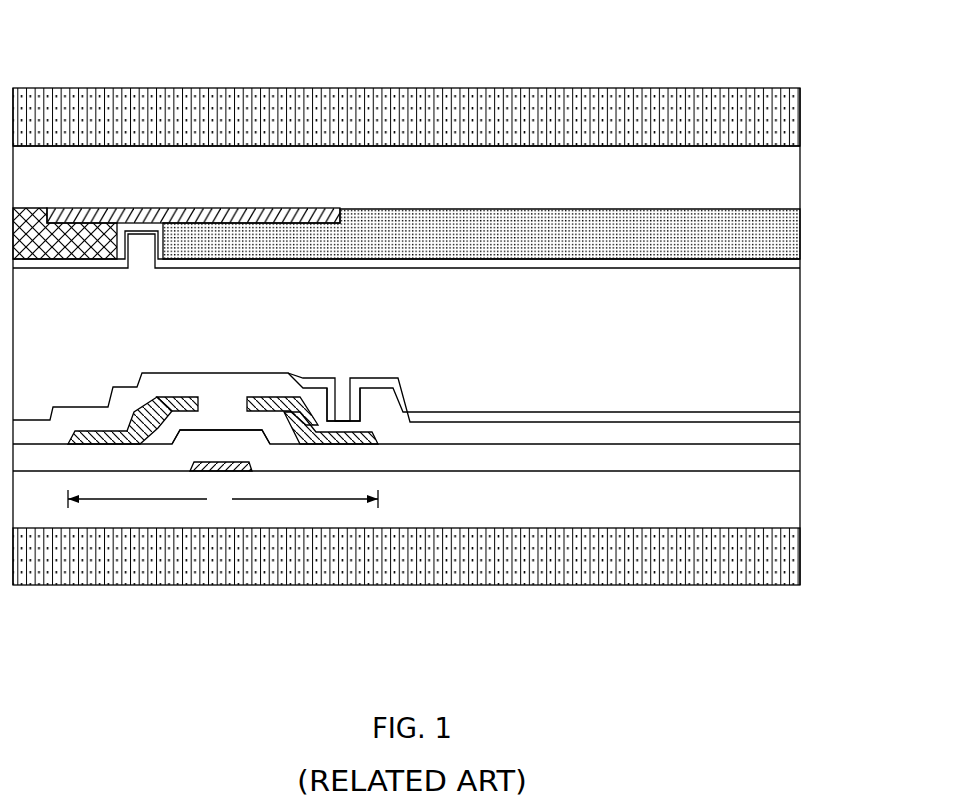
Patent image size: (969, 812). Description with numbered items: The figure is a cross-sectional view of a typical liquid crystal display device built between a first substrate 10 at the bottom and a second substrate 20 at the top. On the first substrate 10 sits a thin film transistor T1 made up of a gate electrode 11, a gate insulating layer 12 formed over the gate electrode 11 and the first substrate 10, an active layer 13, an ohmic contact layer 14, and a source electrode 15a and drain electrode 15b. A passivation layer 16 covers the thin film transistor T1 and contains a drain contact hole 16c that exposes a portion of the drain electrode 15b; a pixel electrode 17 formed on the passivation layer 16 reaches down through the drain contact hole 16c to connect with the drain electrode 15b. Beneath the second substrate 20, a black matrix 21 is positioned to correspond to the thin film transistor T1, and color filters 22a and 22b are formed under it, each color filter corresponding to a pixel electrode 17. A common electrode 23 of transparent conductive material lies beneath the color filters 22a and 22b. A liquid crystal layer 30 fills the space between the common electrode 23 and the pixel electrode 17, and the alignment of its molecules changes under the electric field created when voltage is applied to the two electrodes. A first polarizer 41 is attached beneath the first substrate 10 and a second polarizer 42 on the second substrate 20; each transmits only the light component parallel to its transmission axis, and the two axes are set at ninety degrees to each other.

The first substrate 10 is at (463, 505).
The gate electrode 11 is at (208, 471).
The gate insulating layer 12 is at (568, 458).
The active layer 13 is at (242, 420).
The ohmic contact layer 14 is at (141, 405).
The source electrode 15a is at (185, 397).
The drain electrode 15b is at (262, 397).
The passivation layer 16 is at (60, 418).
The drain contact hole 16c is at (346, 370).
The pixel electrode 17 is at (458, 412).
The second substrate 20 is at (282, 165).
The black matrix 21 is at (150, 215).
The color filter 22a is at (405, 222).
The color filter 22b is at (80, 245).
The common electrode 23 is at (641, 260).
The liquid crystal layer 30 is at (803, 356).
The first polarizer 41 is at (678, 570).
The second polarizer 42 is at (520, 88).
The thin film transistor T1 is at (223, 499).